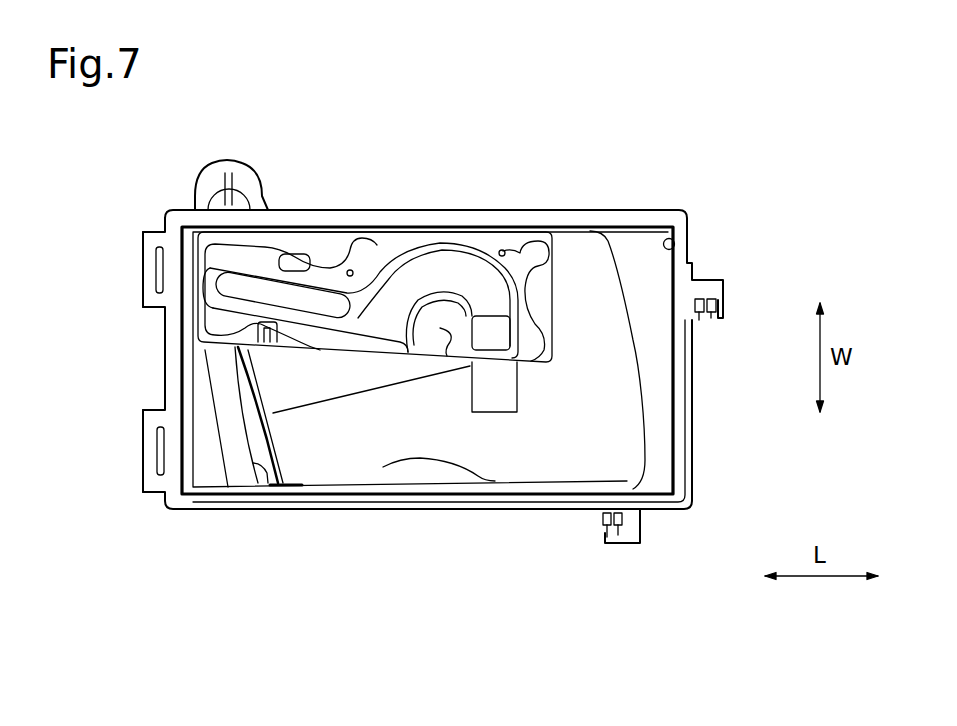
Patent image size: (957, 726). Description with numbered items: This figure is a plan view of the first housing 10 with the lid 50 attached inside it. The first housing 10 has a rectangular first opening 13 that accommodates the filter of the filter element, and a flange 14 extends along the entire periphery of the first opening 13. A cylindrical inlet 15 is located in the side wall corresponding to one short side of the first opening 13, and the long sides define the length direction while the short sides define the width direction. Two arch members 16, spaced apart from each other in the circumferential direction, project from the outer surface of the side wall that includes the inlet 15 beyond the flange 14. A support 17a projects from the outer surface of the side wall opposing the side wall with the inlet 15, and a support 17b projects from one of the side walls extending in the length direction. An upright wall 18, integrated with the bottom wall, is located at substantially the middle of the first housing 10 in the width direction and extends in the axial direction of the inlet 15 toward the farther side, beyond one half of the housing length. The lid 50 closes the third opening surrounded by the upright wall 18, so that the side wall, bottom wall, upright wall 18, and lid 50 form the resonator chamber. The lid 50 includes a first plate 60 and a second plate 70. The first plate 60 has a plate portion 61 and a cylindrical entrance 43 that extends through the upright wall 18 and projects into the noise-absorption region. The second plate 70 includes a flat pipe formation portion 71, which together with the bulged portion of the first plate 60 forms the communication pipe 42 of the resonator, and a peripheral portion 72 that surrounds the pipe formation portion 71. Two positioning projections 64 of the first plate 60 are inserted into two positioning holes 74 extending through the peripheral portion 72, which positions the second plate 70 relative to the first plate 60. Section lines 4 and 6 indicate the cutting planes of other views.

The section line IV-IV 4 is at (447, 157).
The section line VI-VI 6 is at (117, 358).
The first housing 10 is at (177, 521).
The first opening 13 is at (680, 245).
The flange 14 is at (678, 447).
The inlet 15 is at (271, 487).
The arch member 16 is at (143, 263).
The support 17a is at (694, 322).
The support 17b is at (605, 534).
The upright wall 18 is at (357, 343).
The communication pipe 42 is at (457, 261).
The entrance 43 is at (456, 363).
The lid 50 is at (628, 156).
The first plate 60 is at (548, 307).
The plate portion 61 is at (418, 348).
The positioning projection 64 is at (349, 268).
The second plate 70 is at (533, 251).
The pipe formation portion 71 is at (232, 290).
The peripheral portion 72 is at (372, 240).
The positioning hole 74 is at (324, 322).